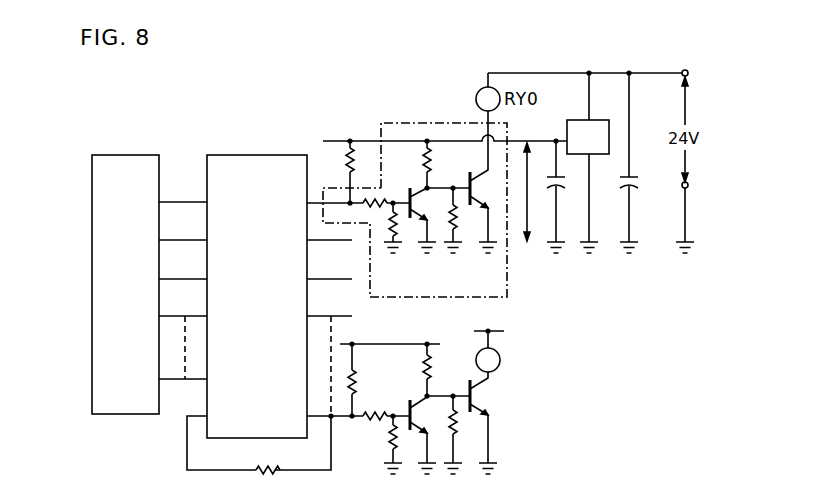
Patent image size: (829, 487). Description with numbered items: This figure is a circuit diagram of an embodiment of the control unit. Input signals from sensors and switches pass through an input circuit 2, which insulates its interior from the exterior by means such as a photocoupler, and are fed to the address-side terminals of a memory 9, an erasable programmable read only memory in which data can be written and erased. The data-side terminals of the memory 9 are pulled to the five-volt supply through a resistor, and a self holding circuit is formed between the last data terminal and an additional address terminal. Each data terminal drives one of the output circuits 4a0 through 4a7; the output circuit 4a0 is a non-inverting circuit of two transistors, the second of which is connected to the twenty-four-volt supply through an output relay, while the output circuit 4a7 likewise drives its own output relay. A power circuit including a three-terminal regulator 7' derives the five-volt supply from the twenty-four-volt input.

The input circuit 2 is at (120, 154).
The memory 9 is at (237, 154).
The three-terminal regulator 7' is at (590, 163).
The output circuit 4a0 is at (508, 280).
The output circuit 4a7 is at (502, 405).